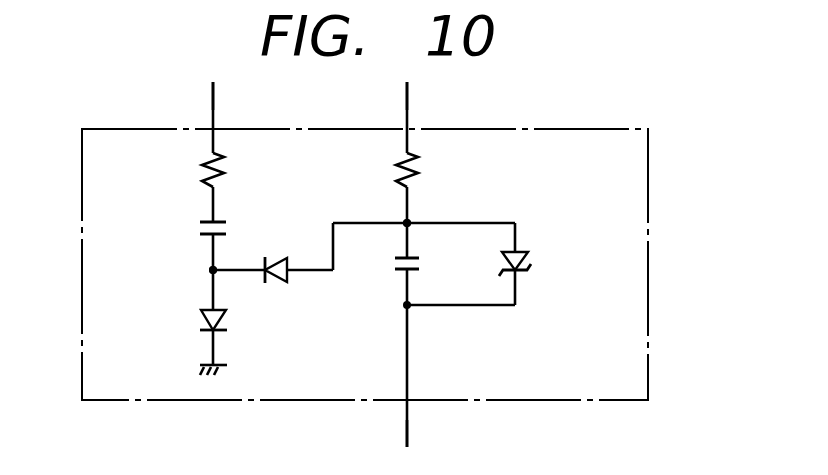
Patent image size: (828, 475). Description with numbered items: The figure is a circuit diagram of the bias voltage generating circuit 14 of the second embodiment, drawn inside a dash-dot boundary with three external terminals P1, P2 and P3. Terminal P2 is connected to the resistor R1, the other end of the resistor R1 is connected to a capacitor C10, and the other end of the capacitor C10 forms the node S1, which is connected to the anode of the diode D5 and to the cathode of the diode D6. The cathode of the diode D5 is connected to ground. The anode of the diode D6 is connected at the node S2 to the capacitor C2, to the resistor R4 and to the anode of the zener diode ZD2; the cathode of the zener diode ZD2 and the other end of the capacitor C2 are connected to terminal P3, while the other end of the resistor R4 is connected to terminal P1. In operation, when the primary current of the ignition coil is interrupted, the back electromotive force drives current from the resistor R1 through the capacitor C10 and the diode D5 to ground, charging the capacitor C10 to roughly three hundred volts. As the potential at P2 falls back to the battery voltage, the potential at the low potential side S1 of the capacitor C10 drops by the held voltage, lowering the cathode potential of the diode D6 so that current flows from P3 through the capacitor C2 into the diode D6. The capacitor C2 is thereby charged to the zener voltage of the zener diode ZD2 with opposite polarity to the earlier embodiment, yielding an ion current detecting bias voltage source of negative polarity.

The bias voltage generating circuit 14 is at (628, 128).
The terminal P1 is at (409, 103).
The terminal P2 is at (215, 103).
The terminal P3 is at (409, 423).
The resistor R1 is at (227, 170).
The resistor R4 is at (421, 170).
The capacitor C10 is at (231, 228).
The capacitor C2 is at (424, 264).
The low potential side of capacitor C10 S1 is at (206, 270).
The node S2 is at (361, 220).
The diode D5 is at (226, 319).
The diode D6 is at (275, 276).
The zener diode ZD2 is at (529, 260).